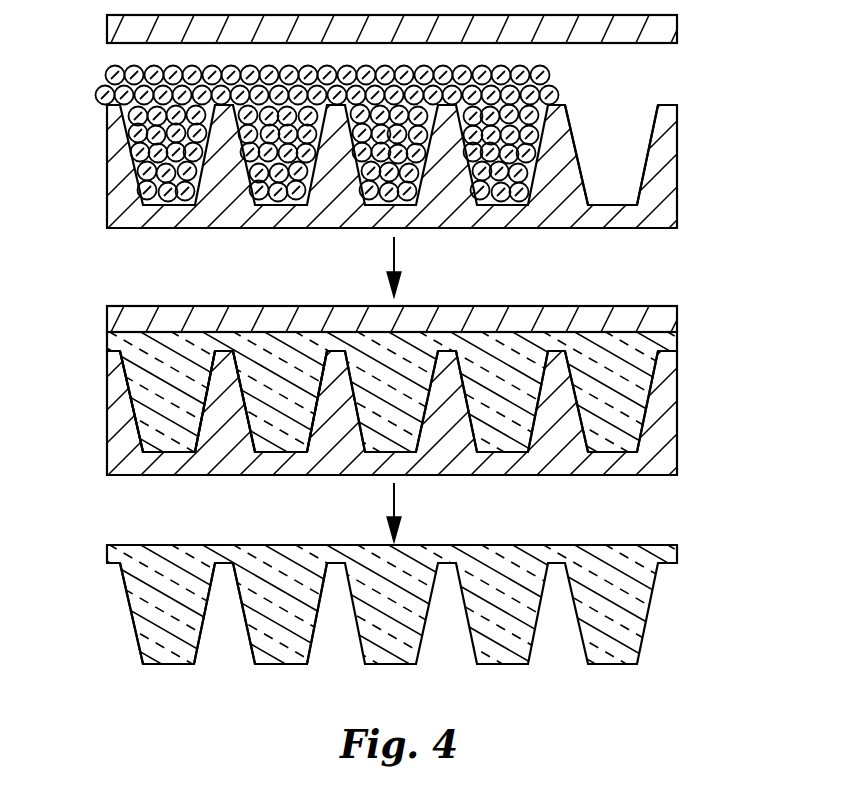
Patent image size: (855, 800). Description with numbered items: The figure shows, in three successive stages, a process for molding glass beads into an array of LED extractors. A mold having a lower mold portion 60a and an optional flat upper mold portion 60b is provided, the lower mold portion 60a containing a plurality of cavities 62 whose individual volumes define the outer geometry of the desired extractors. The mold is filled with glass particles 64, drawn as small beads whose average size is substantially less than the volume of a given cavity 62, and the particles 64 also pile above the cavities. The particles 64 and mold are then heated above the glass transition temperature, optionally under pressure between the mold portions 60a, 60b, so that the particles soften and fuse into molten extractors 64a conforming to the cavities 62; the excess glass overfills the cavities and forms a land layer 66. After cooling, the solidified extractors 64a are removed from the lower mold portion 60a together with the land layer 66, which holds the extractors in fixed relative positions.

The lower mold portion 60a is at (677, 178).
The upper mold portion 60b is at (677, 27).
The cavities 62 is at (618, 122).
The glass particles 64 is at (97, 95).
The extractors 64a is at (172, 433).
The land layer 66 is at (677, 341).